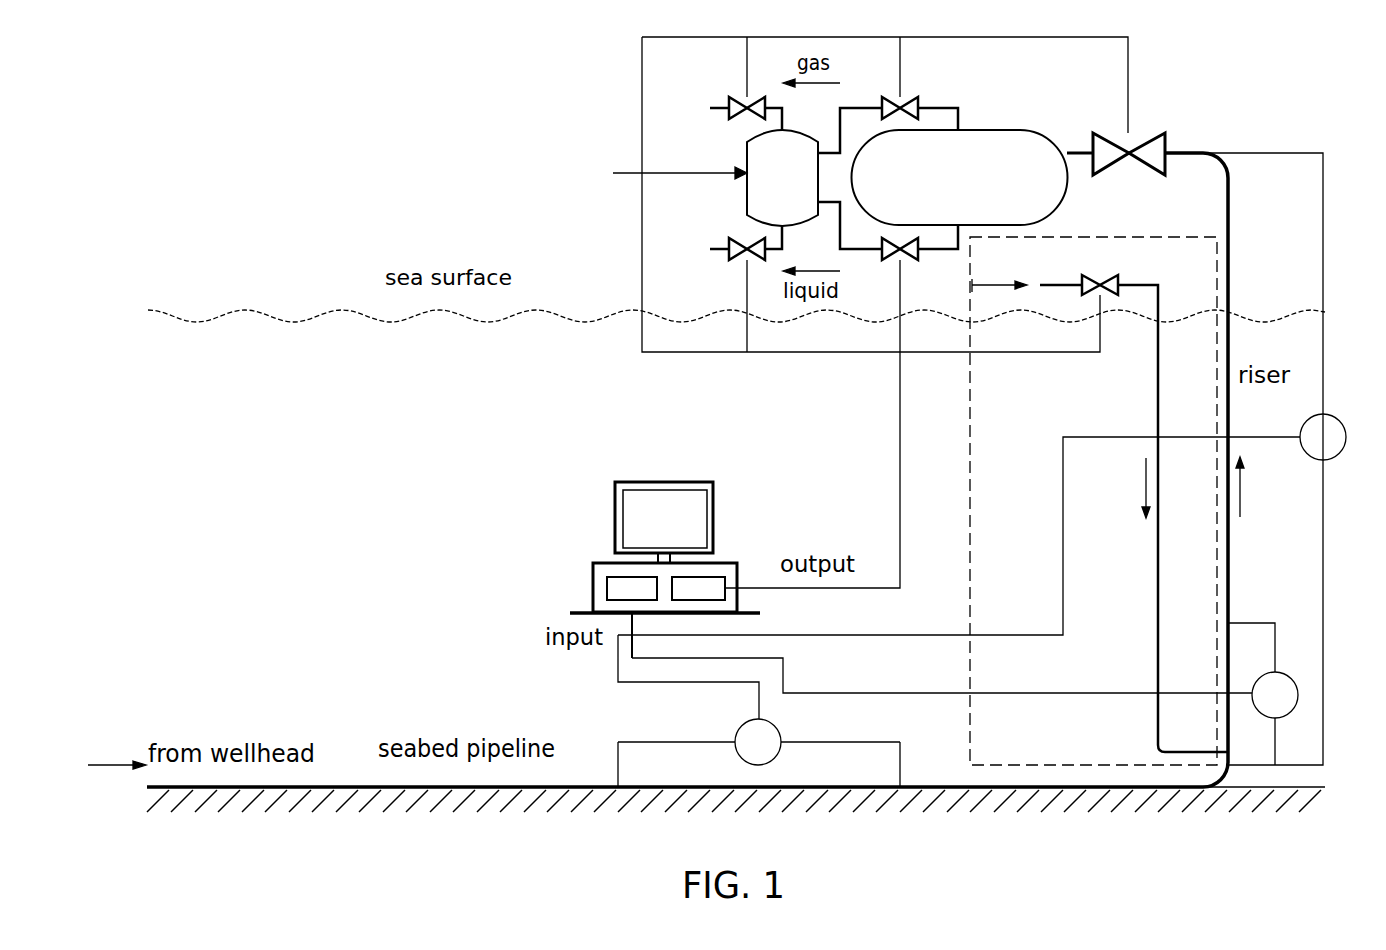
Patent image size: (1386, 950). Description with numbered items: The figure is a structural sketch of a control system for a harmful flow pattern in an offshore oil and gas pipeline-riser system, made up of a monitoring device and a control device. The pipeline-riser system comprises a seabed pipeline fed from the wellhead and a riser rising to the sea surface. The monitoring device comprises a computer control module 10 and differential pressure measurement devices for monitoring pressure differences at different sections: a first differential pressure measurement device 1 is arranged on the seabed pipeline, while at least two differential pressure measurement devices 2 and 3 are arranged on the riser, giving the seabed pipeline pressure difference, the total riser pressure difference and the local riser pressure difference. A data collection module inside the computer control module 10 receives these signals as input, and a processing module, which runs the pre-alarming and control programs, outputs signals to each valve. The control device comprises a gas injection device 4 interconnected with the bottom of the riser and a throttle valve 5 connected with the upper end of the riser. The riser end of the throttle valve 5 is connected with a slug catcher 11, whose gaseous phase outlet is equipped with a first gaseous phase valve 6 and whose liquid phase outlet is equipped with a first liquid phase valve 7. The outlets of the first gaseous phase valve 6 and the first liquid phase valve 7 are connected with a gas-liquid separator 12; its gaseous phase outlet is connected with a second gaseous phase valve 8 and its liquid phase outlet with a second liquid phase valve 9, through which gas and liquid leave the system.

The first differential pressure measurement device 1 is at (759, 753).
The differential pressure measurement device 2 is at (1317, 450).
The differential pressure measurement device 3 is at (1267, 694).
The gas injection device 4 is at (1099, 501).
The throttle valve 5 is at (1116, 141).
The first gaseous phase valve 6 is at (899, 89).
The first liquid phase valve 7 is at (898, 267).
The second gaseous phase valve 8 is at (746, 95).
The second liquid phase valve 9 is at (746, 263).
The computer control module 10 is at (656, 547).
The slug catcher 11 is at (960, 177).
The gas-liquid separator 12 is at (641, 178).